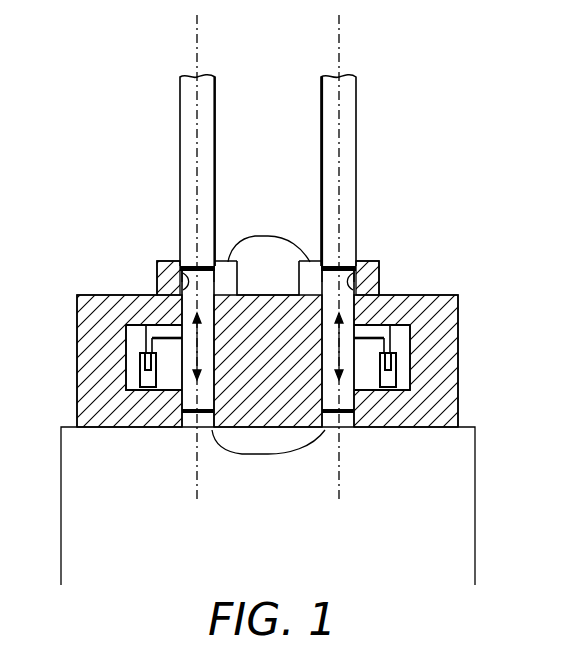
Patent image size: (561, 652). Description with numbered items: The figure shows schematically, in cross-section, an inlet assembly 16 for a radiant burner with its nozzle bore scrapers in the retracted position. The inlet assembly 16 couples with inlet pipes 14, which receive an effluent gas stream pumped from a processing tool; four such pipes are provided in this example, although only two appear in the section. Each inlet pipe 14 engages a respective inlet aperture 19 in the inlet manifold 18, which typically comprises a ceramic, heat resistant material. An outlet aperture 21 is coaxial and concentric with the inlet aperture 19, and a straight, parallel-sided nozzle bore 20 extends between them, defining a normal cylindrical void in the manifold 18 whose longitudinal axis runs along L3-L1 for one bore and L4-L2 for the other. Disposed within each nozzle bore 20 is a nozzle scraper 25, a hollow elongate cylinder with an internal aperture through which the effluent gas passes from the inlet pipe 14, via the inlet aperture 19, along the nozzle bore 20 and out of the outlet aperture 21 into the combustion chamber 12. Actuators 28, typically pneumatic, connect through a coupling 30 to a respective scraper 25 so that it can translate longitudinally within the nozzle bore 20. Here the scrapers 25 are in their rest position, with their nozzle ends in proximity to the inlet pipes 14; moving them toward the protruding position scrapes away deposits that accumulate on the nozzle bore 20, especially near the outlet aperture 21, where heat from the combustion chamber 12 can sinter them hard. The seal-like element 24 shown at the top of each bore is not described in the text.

The combustion chamber 12 is at (274, 560).
The inlet pipe 14 is at (180, 88).
The inlet assembly 16 is at (70, 222).
The inlet manifold 18 is at (458, 300).
The inlet aperture 19 is at (269, 236).
The nozzle bore 20 is at (197, 428).
The outlet aperture 21 is at (268, 452).
The upper seal 24 is at (330, 273).
The nozzle scraper 25 is at (182, 276).
The actuator 28 is at (141, 375).
The coupling 30 is at (148, 325).
The longitudinal axis end point L1 is at (197, 489).
The longitudinal axis end point L2 is at (339, 489).
The longitudinal axis end point L3 is at (197, 23).
The longitudinal axis end point L4 is at (339, 23).